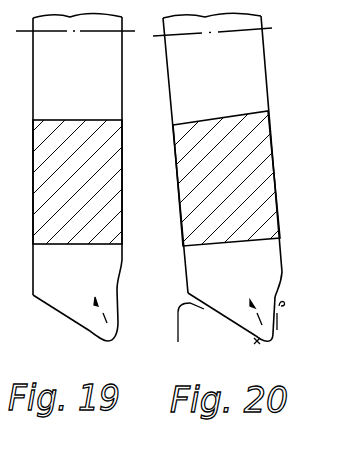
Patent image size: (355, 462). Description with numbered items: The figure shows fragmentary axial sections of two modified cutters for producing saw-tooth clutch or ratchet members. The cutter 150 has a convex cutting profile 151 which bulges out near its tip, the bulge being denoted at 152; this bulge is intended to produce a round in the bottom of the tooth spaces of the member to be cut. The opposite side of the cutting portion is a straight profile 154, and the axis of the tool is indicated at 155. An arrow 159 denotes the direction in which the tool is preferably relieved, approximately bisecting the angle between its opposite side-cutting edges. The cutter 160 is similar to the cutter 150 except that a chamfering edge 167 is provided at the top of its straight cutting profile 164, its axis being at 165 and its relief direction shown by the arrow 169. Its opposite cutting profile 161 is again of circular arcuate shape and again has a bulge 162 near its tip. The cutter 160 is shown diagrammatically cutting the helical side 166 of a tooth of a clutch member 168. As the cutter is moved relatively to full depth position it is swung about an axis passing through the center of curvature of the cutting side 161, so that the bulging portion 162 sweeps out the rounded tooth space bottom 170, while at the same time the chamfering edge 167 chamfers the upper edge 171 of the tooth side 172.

In FIG. 19, the cutter 150 is at (118, 160).
In FIG. 19, the convex cutting profile 151 is at (72, 326).
In FIG. 19, the bulge 152 is at (106, 343).
In FIG. 19, the straight profile 154 is at (118, 304).
In FIG. 19, the axis of the tool 155 is at (104, 31).
In FIG. 19, the arrow 159 is at (94, 312).
In FIG. 20, the cutter 160 is at (265, 158).
In FIG. 20, the cutting profile 161 is at (199, 315).
In FIG. 20, the bulge 162 is at (262, 348).
In FIG. 20, the straight cutting profile 164 is at (277, 325).
In FIG. 20, the axis of the tool 165 is at (247, 32).
In FIG. 20, the helical side 166 is at (228, 327).
In FIG. 20, the chamfering edge 167 is at (281, 300).
In FIG. 20, the clutch member 168 is at (187, 325).
In FIG. 20, the arrow 169 is at (253, 316).
In FIG. 20, the rounded tooth space bottom 170 is at (271, 347).
In FIG. 20, the upper edge 171 is at (296, 300).
In FIG. 20, the tooth side 172 is at (279, 333).